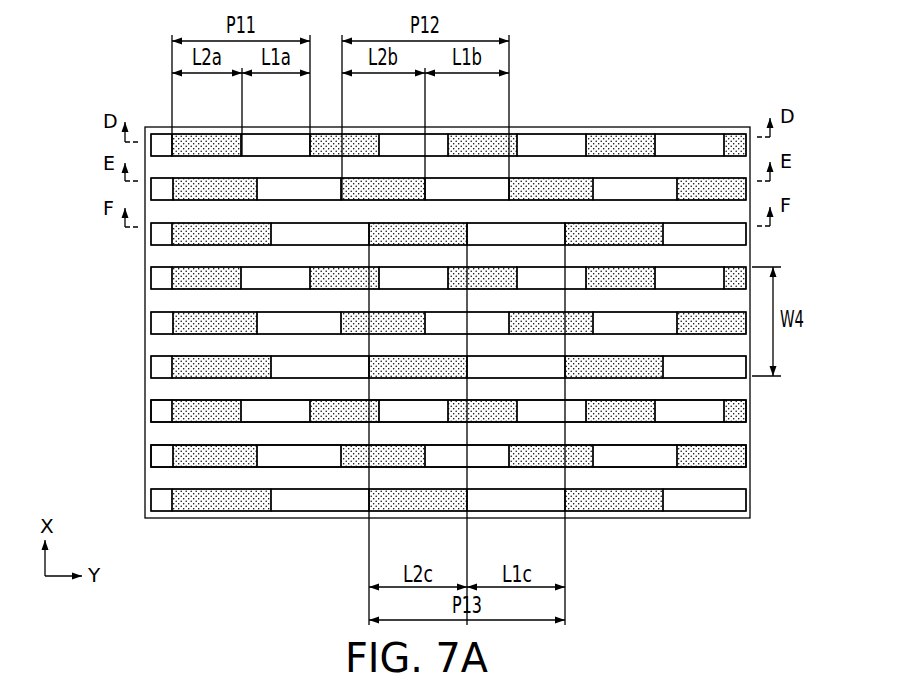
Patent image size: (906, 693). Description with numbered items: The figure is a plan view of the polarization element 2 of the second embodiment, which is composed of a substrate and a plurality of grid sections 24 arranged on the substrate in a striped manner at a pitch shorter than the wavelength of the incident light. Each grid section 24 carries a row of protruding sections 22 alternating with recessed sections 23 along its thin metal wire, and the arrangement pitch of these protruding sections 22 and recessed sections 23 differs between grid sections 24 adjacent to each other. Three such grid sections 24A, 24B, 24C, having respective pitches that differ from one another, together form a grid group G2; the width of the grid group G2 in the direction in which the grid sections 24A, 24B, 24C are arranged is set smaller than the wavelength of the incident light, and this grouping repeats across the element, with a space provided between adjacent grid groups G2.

The polarization element 2 is at (727, 80).
The protruding section 22 is at (278, 141).
The recessed section 23 is at (210, 141).
The grid section 24 is at (740, 410).
The grid section 24A is at (155, 148).
The grid section 24B is at (155, 192).
The grid section 24C is at (155, 237).
The grid group G2 is at (53, 132).